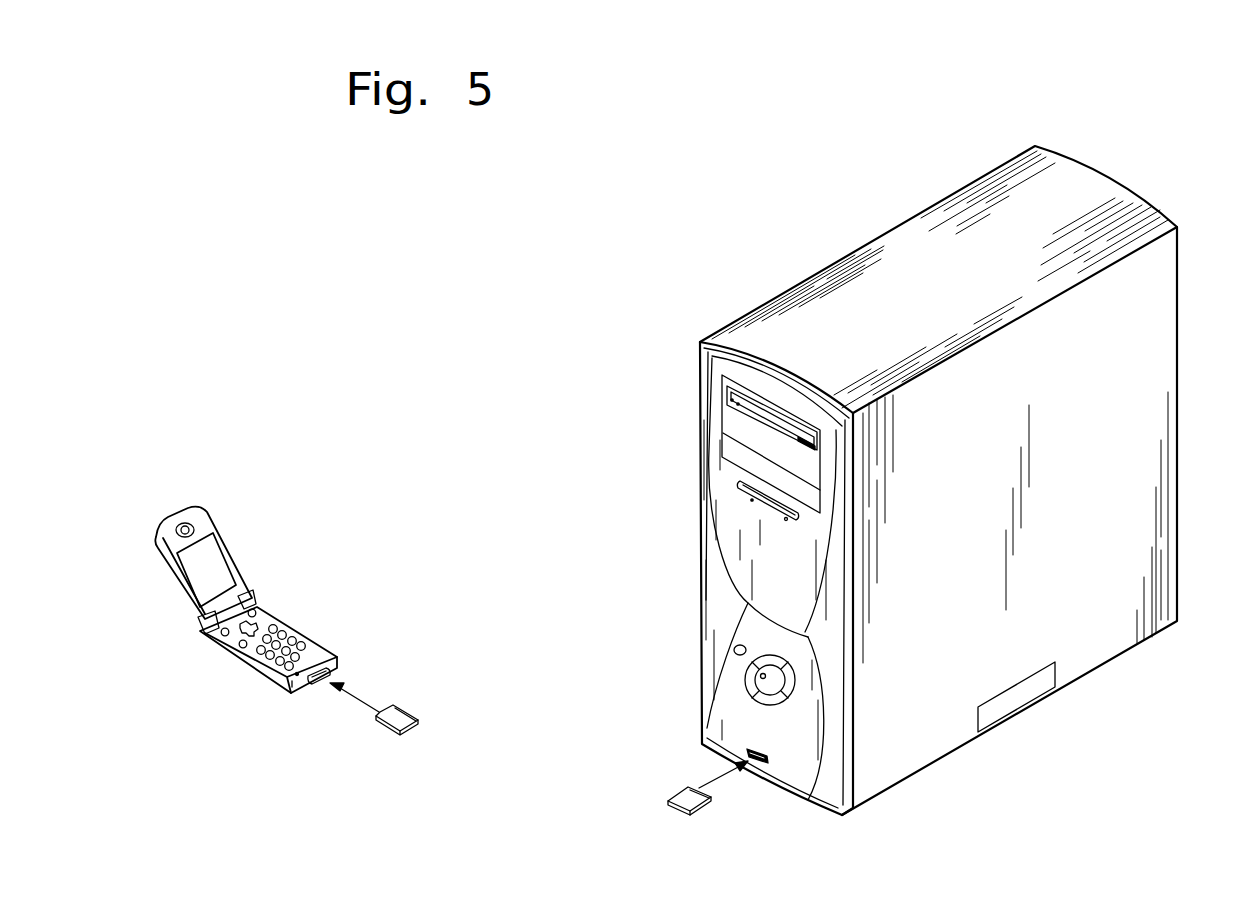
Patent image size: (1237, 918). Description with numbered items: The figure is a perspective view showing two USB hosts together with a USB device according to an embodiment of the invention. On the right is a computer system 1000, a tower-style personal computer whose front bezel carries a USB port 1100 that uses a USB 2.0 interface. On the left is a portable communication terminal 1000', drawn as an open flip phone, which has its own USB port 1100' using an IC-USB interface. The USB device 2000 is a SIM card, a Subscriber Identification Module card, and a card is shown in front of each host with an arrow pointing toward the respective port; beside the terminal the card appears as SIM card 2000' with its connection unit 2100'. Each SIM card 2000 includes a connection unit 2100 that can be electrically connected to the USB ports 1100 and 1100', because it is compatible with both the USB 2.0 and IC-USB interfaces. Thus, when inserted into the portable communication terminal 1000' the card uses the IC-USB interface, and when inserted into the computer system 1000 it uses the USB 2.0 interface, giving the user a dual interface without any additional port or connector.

The computer system 1000 is at (955, 464).
The USB port 1100 is at (698, 724).
The USB device 2000 is at (634, 790).
The connection unit 2100 is at (669, 756).
The portable communication terminal 1000' is at (246, 593).
The USB port 1100' is at (357, 651).
The memory card connector (phone) 2100' is at (391, 692).
The memory card (phone) 2000' is at (455, 721).